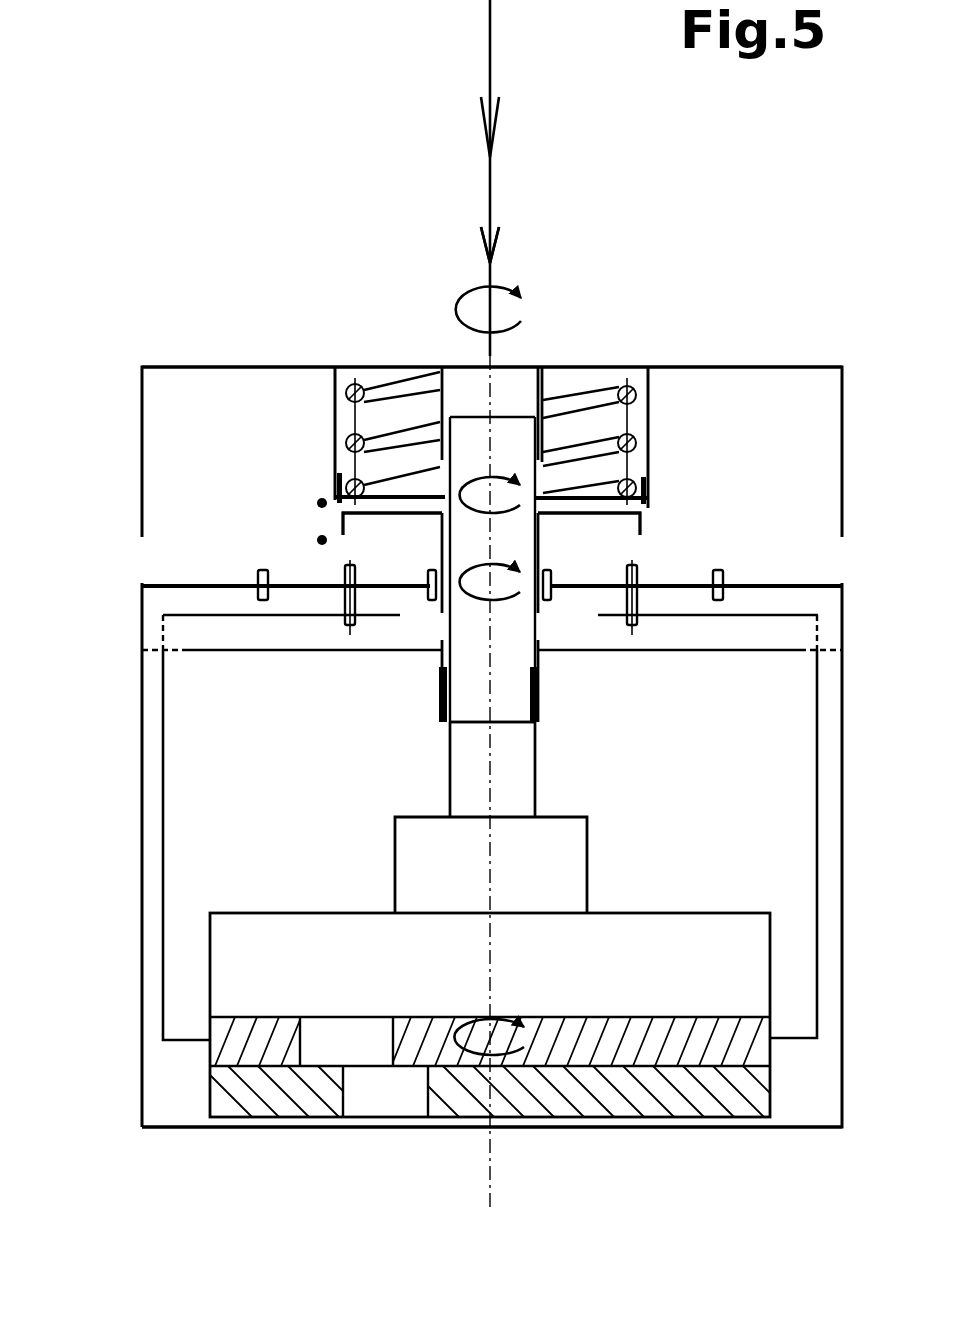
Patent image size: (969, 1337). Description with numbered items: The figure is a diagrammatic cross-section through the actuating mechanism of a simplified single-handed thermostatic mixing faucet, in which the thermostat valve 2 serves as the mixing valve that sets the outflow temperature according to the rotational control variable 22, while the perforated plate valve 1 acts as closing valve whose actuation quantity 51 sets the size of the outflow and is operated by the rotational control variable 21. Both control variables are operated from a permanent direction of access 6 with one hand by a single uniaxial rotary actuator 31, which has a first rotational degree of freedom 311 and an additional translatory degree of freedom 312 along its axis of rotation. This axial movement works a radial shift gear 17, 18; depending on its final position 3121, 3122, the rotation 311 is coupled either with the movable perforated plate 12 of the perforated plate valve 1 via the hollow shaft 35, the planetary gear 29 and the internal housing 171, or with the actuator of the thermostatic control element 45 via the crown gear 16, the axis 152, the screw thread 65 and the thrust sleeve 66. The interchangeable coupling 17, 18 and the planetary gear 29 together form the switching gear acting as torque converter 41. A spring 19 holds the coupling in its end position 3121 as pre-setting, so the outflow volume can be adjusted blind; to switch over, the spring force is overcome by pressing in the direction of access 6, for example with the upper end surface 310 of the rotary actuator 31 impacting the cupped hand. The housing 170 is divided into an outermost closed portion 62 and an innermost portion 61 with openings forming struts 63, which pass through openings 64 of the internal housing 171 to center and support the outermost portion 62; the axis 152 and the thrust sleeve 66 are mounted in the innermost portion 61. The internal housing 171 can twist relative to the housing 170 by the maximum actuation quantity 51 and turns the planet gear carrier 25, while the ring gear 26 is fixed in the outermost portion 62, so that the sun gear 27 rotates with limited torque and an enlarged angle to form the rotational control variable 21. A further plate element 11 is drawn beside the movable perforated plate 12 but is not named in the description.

The perforated plate valve 1 is at (190, 1083).
The thermostat valve 2 is at (642, 950).
The direction of access 6 is at (493, 65).
The lower support plate 11 is at (312, 1090).
The movable perforated plate 12 is at (258, 1040).
The crown gear 16 is at (646, 500).
The radial shift gear 17 is at (577, 493).
The radial shift gear 18 is at (655, 412).
The spring 19 is at (557, 397).
The rotational control variable 21 is at (497, 563).
The rotational control variable 22 is at (478, 477).
The planet gear carrier 25 is at (280, 614).
The ring gear 26 is at (255, 568).
The sun gear 27 is at (428, 585).
The planetary gear 29 is at (313, 628).
The rotary actuator 31 is at (122, 367).
The hollow shaft 35 is at (558, 515).
The torque converter 41 is at (360, 672).
The thermostatic control element 45 is at (542, 850).
The actuation quantity 51 is at (470, 1050).
The innermost portion 61 is at (213, 651).
The outermost portion 62 is at (141, 618).
The struts 63 is at (156, 653).
The openings 64 is at (163, 668).
The screw thread 65 is at (440, 692).
The thrust sleeve 66 is at (467, 777).
The axis 152 is at (485, 695).
The housing 170 is at (813, 1132).
The internal housing 171 is at (815, 980).
The upper end surface 310 is at (587, 360).
The first rotational degree of freedom 311 is at (470, 293).
The translatory degree of freedom 312 is at (493, 217).
The end position 3121 is at (322, 503).
The end position 3122 is at (322, 540).